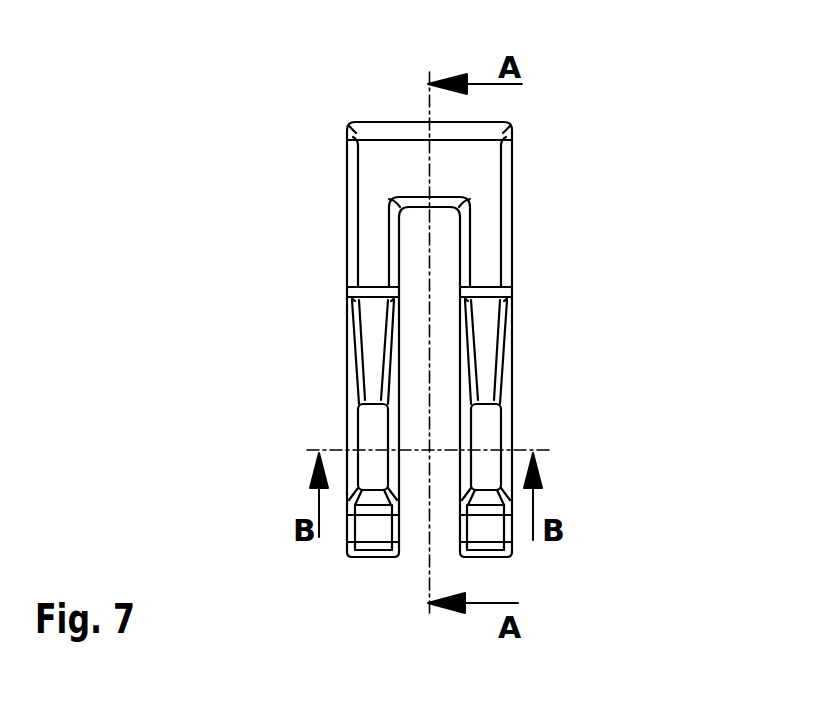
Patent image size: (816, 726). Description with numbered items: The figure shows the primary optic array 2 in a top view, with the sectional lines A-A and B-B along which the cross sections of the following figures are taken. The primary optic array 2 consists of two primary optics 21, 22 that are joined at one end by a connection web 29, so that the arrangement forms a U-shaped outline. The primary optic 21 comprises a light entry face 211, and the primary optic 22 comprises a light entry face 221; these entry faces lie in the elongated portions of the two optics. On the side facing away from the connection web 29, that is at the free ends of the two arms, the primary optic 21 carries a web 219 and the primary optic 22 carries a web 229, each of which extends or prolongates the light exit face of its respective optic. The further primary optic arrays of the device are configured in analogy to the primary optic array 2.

The primary optic array 2 is at (568, 166).
The connection web 29 is at (375, 177).
The primary optic 21 is at (375, 268).
The primary optic 22 is at (486, 268).
The light entry face 211 is at (371, 430).
The light entry face 221 is at (488, 430).
The web 219 is at (368, 545).
The web 229 is at (491, 545).